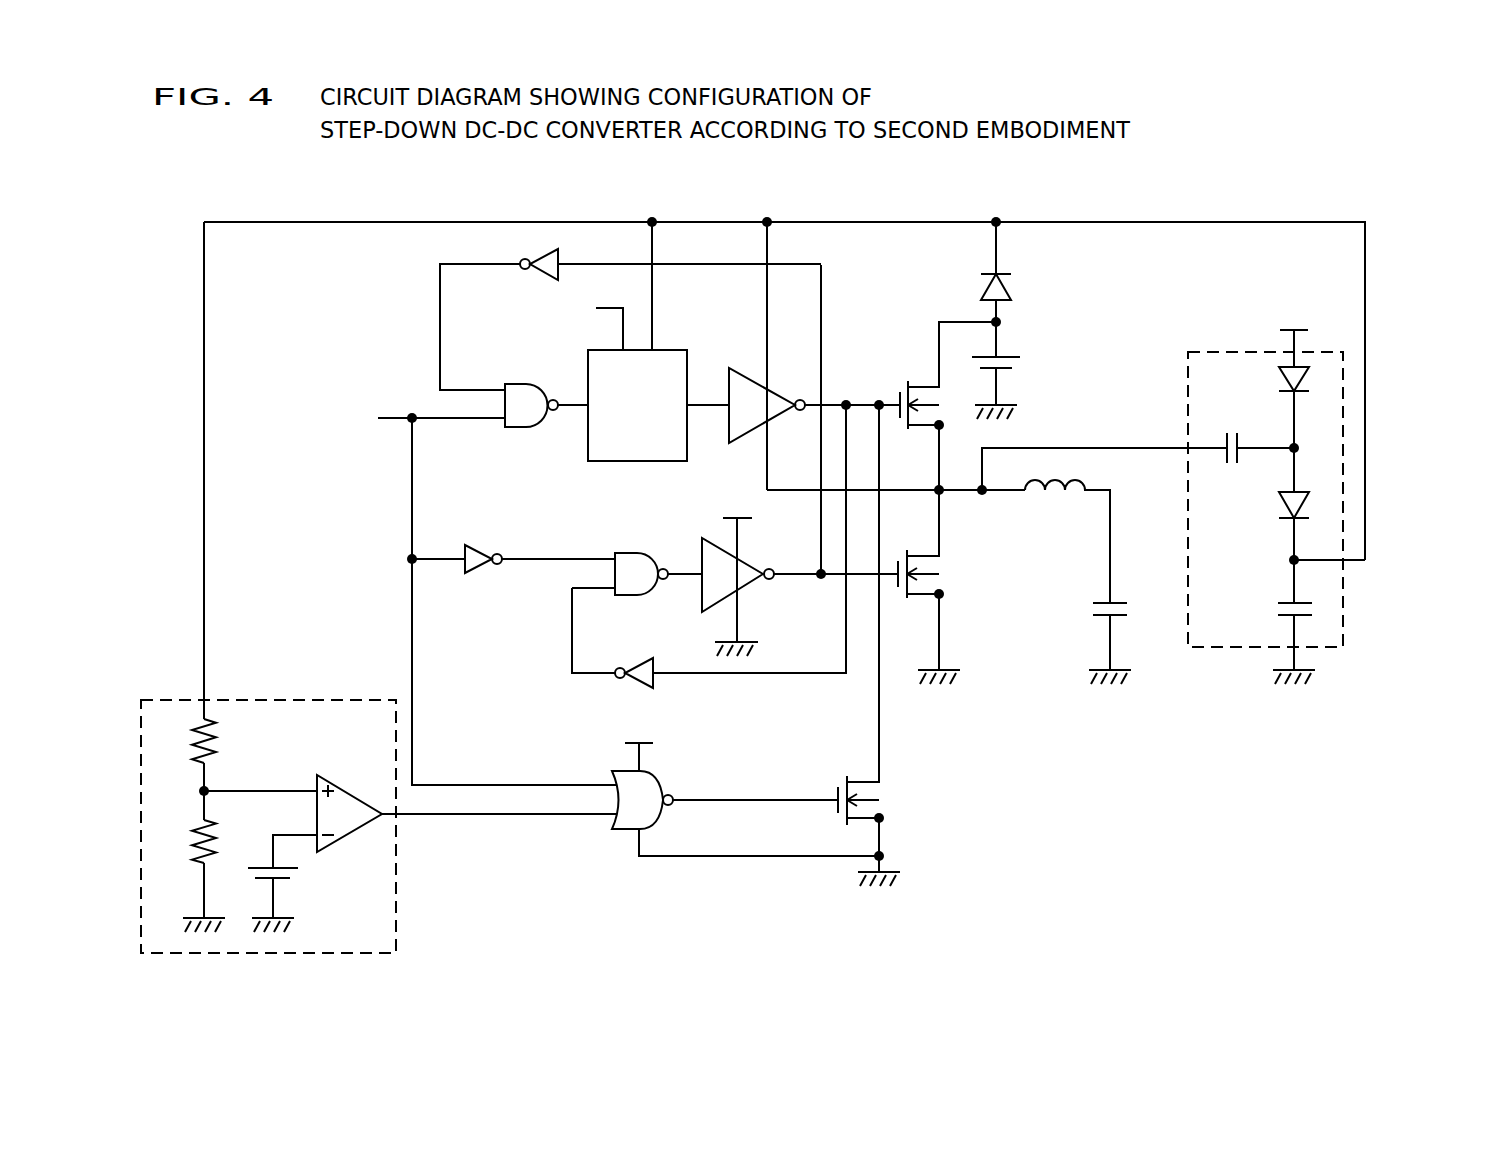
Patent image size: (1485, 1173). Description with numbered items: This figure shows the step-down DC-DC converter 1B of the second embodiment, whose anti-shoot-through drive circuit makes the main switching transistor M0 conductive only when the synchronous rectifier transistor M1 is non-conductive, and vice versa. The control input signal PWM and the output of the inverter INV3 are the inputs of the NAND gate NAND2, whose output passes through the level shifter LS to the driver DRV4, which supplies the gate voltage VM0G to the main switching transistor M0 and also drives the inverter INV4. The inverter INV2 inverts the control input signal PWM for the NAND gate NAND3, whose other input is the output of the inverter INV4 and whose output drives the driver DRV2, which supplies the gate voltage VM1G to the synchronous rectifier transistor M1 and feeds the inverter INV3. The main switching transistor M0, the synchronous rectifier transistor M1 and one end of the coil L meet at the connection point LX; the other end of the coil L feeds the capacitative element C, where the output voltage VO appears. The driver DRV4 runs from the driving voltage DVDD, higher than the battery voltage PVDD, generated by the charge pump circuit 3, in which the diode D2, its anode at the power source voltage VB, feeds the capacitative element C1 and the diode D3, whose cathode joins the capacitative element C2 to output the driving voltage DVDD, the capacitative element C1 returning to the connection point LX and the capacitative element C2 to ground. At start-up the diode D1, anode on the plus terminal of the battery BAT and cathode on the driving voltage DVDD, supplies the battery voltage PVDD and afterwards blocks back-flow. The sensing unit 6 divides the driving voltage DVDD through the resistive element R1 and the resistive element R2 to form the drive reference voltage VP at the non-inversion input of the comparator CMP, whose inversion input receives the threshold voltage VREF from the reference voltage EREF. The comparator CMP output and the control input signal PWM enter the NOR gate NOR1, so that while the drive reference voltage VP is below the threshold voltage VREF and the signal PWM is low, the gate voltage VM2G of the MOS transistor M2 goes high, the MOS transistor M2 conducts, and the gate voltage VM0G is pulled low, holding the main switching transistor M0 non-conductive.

The step-down DC-DC converter 1B is at (1269, 206).
The charge pump circuit 3 is at (1345, 620).
The sensing unit 6 is at (397, 925).
The control input signal PWM is at (468, 595).
The inverter INV3 is at (544, 257).
The NAND gate NAND2 is at (524, 385).
The level shifter LS is at (594, 446).
The driver DRV4 is at (745, 366).
The gate voltage VM0G is at (866, 400).
The main switching transistor M0 is at (920, 373).
The diode D1 is at (1010, 288).
The battery voltage PVDD is at (1000, 338).
The battery BAT is at (1005, 370).
The connection point LX is at (940, 524).
The synchronous rectifier transistor M1 is at (916, 600).
The coil L is at (1067, 541).
The output voltage VO is at (1112, 513).
The capacitative element C is at (1099, 642).
The power source voltage VB is at (948, 541).
The diode D2 is at (1280, 373).
The capacitative element C1 is at (1258, 433).
The diode D3 is at (1280, 500).
The driving voltage DVDD is at (1368, 517).
The capacitative element C2 is at (1280, 642).
The inverter INV2 is at (482, 574).
The NAND gate NAND3 is at (628, 553).
The inverter INV4 is at (640, 661).
The driver DRV2 is at (752, 590).
The gate voltage VM1G is at (858, 582).
The resistive element R1 is at (185, 769).
The resistive element R2 is at (190, 876).
The drive reference voltage VP is at (297, 790).
The comparator CMP is at (362, 797).
The threshold voltage VREF is at (268, 846).
The reference voltage EREF is at (283, 880).
The NOR gate NOR1 is at (620, 831).
The gate voltage VM2G is at (743, 799).
The MOS transistor M2 is at (866, 778).